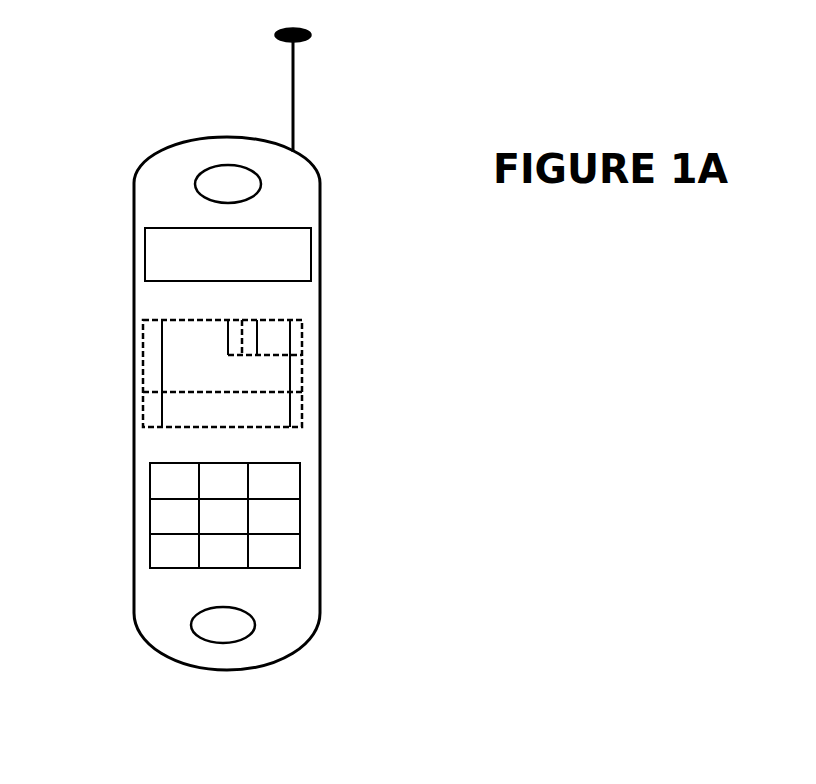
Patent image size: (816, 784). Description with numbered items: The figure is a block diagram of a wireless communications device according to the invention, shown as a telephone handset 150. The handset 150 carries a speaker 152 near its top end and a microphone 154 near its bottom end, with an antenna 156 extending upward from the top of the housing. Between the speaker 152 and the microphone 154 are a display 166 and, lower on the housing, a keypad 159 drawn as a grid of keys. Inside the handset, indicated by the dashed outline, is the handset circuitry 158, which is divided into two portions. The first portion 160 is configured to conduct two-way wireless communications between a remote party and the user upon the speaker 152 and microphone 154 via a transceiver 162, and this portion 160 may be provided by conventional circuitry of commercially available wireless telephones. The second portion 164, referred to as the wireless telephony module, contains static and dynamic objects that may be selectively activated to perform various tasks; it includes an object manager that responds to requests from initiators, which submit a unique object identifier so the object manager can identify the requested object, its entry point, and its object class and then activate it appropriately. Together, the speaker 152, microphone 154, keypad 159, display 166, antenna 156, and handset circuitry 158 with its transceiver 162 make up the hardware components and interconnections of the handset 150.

The telephone handset 150 is at (638, 249).
The speaker 152 is at (217, 166).
The microphone 154 is at (217, 643).
The antenna 156 is at (297, 91).
The handset circuitry 158 is at (225, 365).
The keypad 159 is at (303, 518).
The portion 160 is at (145, 362).
The transceiver 162 is at (302, 325).
The wireless telephony module 164 is at (143, 402).
The display 166 is at (308, 255).